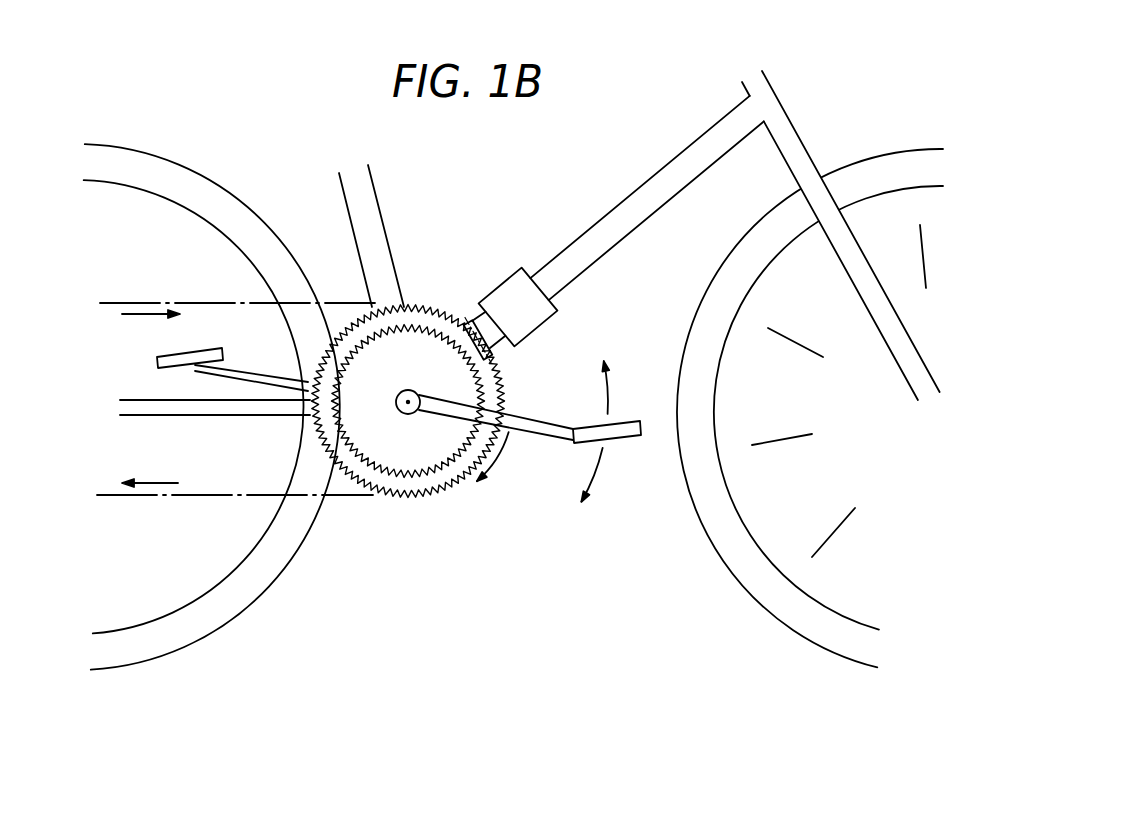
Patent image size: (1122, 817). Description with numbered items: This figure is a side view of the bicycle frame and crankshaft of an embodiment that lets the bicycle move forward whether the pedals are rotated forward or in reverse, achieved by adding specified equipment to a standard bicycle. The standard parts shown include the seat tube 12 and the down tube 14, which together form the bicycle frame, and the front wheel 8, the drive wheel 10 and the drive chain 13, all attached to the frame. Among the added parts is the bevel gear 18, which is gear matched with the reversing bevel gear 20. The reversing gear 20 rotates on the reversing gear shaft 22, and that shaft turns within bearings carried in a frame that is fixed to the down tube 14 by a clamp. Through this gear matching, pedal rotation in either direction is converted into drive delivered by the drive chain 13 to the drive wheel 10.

The front wheel 8 is at (883, 152).
The drive wheel 10 is at (221, 186).
The seat tube 12 is at (378, 208).
The drive chain 13 is at (150, 300).
The down tube 14 is at (683, 188).
The bevel gear 18 is at (384, 448).
The reversing bevel gear 20 is at (470, 325).
The reversing gear shaft 22 is at (500, 342).